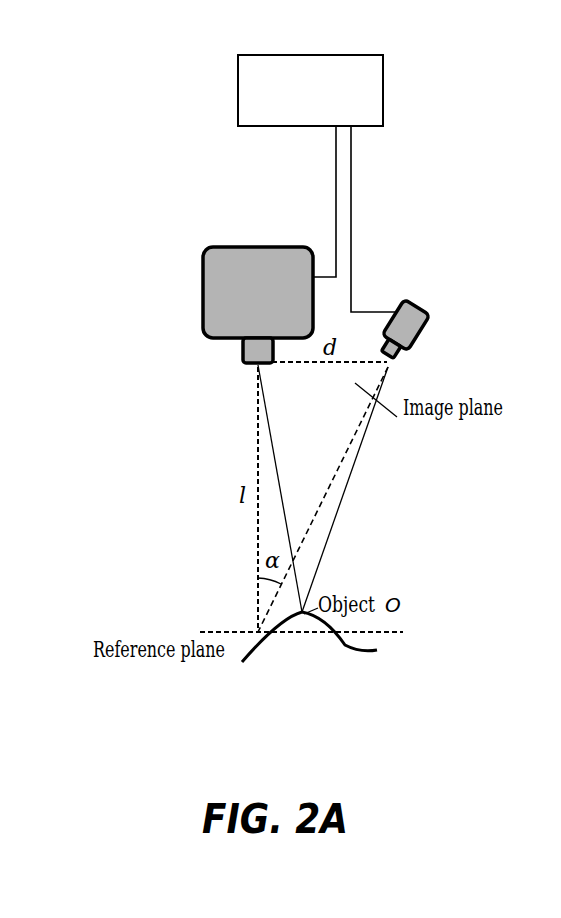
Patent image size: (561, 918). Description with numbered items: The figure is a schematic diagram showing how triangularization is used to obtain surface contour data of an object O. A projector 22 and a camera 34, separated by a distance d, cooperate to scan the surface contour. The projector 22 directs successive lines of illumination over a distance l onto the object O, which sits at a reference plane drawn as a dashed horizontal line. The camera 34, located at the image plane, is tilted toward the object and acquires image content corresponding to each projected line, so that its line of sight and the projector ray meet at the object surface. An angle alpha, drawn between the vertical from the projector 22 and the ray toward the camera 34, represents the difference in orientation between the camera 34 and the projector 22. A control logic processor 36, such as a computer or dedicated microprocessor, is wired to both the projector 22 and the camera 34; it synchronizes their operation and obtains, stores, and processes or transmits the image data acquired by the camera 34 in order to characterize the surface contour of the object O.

The projector 22 is at (203, 285).
The camera 34 is at (423, 310).
The control logic processor 36 is at (383, 98).